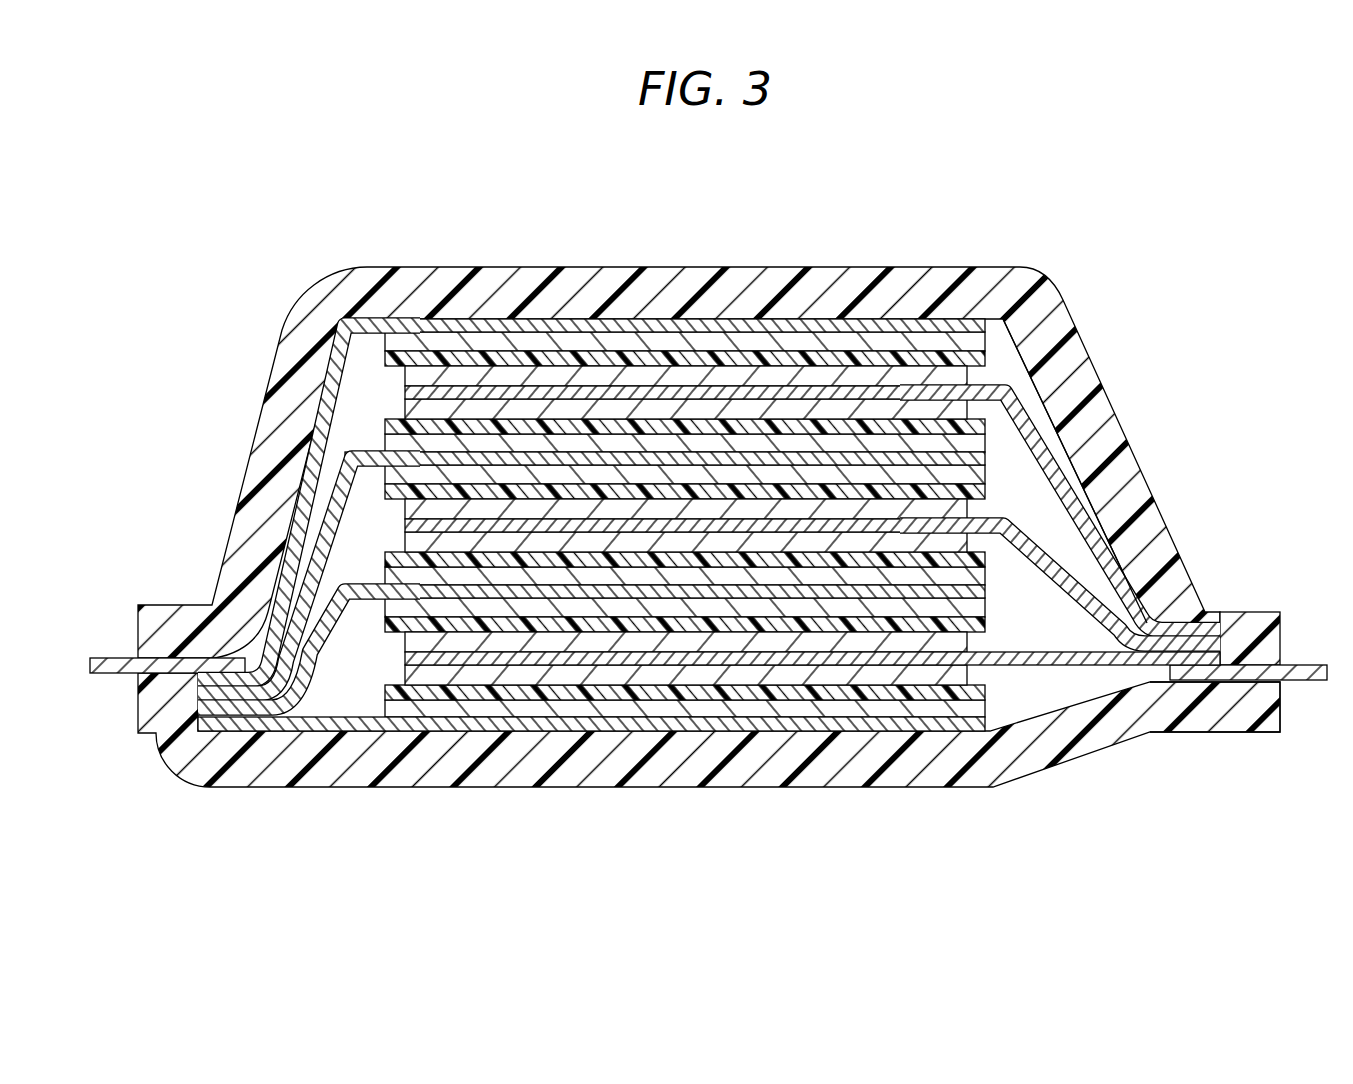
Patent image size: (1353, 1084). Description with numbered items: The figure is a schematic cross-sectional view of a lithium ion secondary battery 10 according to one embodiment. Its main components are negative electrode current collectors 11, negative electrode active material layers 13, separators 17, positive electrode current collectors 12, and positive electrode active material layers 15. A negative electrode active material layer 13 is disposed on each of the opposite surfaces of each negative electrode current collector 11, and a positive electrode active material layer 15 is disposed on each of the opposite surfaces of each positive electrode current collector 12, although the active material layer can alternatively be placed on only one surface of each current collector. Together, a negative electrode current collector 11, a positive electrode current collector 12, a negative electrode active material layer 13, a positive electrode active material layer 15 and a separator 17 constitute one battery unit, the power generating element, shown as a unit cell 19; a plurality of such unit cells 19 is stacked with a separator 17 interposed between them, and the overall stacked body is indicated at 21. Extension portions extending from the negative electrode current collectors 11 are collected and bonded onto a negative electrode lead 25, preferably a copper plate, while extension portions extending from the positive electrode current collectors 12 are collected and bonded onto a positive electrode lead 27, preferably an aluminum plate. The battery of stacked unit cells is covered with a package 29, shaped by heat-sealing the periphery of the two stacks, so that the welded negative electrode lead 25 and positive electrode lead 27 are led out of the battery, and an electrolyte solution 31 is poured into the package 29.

The lithium ion secondary battery 10 is at (280, 186).
The negative electrode current collector 11 is at (795, 328).
The positive electrode current collector 12 is at (820, 216).
The negative electrode active material layer 13 is at (740, 345).
The positive electrode active material layer 15 is at (605, 375).
The separator 17 is at (682, 358).
The unit cell 19 is at (699, 511).
The stacked body 21 is at (699, 511).
The negative electrode lead 25 is at (113, 656).
The positive electrode lead 27 is at (1307, 664).
The package 29 is at (1255, 624).
The electrolyte solution 31 is at (1007, 458).